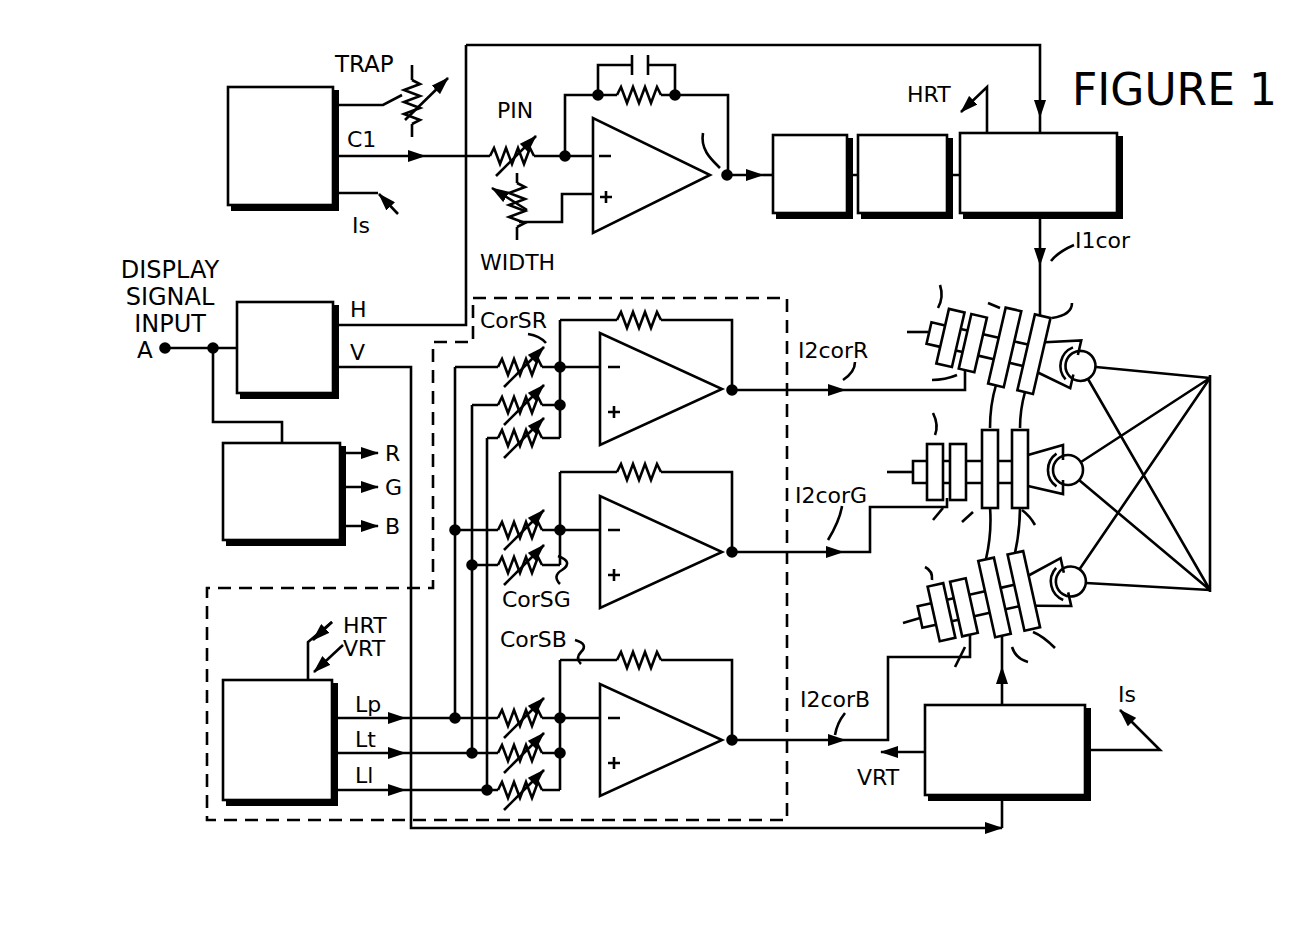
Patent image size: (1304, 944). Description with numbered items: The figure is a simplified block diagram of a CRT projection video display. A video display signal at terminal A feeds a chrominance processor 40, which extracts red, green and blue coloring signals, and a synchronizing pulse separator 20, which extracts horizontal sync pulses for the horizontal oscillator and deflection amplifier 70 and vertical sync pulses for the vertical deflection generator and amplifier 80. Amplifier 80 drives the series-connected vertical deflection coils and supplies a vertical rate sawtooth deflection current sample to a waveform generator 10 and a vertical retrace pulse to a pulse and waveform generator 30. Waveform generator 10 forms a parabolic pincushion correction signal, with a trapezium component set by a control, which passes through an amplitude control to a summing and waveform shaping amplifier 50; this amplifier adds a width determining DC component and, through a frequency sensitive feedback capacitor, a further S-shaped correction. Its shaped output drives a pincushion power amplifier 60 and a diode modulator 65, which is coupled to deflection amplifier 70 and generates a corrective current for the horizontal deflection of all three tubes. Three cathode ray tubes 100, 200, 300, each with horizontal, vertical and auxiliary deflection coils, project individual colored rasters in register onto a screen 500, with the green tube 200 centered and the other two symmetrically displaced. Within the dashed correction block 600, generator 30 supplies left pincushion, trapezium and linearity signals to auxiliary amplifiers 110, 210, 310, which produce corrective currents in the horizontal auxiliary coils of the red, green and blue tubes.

The waveform generator 10 is at (282, 147).
The synchronizing pulse separator 20 is at (286, 349).
The pulse and waveform generator 30 is at (279, 741).
The chrominance processor 40 is at (283, 493).
The summing and waveform shaping amplifier 50 is at (688, 158).
The pincushion power amplifier 60 is at (811, 175).
The diode modulator 65 is at (904, 175).
The horizontal oscillator and deflection amplifier 70 is at (1040, 174).
The vertical deflection generator and amplifier 80 is at (1006, 751).
The red cathode ray tube 100 is at (932, 322).
The red auxiliary deflection amplifier 110 is at (669, 387).
The green cathode ray tube 200 is at (908, 458).
The green auxiliary deflection amplifier 210 is at (668, 553).
The blue cathode ray tube 300 is at (915, 612).
The blue auxiliary deflection amplifier 310 is at (670, 734).
The screen 500 is at (1210, 592).
The auxiliary horizontal deflection correction circuit 600 is at (497, 559).